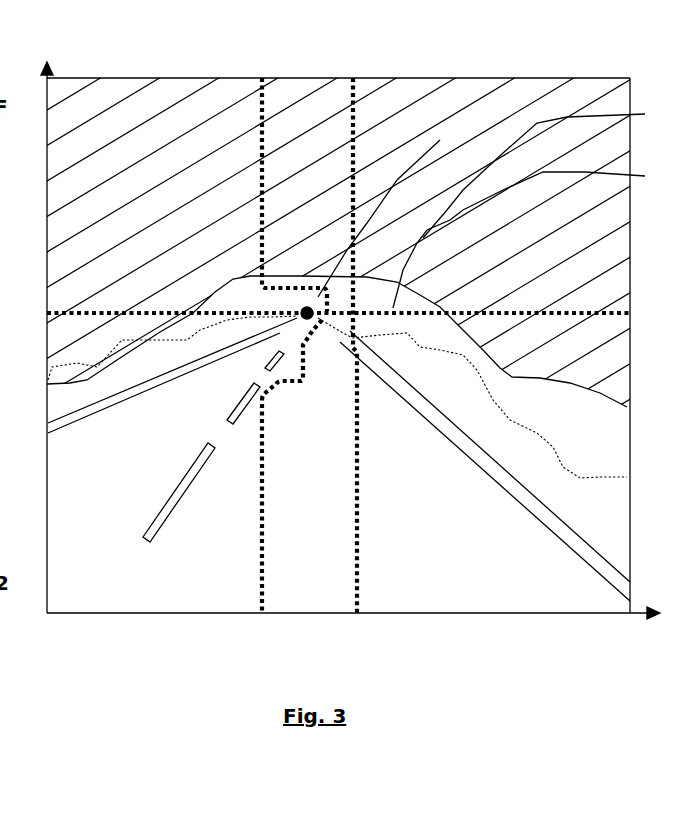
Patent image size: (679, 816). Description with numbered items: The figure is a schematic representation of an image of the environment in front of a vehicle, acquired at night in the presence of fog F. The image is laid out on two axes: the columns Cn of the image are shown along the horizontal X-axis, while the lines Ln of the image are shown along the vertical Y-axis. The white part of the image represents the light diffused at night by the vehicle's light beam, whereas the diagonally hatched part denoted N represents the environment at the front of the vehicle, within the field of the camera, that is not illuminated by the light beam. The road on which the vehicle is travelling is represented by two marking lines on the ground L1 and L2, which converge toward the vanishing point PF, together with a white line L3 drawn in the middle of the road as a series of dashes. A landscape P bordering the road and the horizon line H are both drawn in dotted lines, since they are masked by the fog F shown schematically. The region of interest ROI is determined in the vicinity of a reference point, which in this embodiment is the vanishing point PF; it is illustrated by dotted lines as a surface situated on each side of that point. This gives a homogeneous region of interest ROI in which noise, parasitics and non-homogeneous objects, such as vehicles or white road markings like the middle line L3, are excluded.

The lines Ln is at (41, 320).
The columns Cn is at (353, 629).
The region of interest ROI is at (355, 66).
The vanishing point PF is at (495, 200).
The horizon line H is at (533, 237).
The environment not illuminated by the light beam N is at (608, 231).
The fog F is at (361, 341).
The landscape P is at (362, 397).
The marking line on the ground L1 is at (150, 391).
The marking line on the ground L2 is at (607, 562).
The middle marking line L3 is at (160, 488).